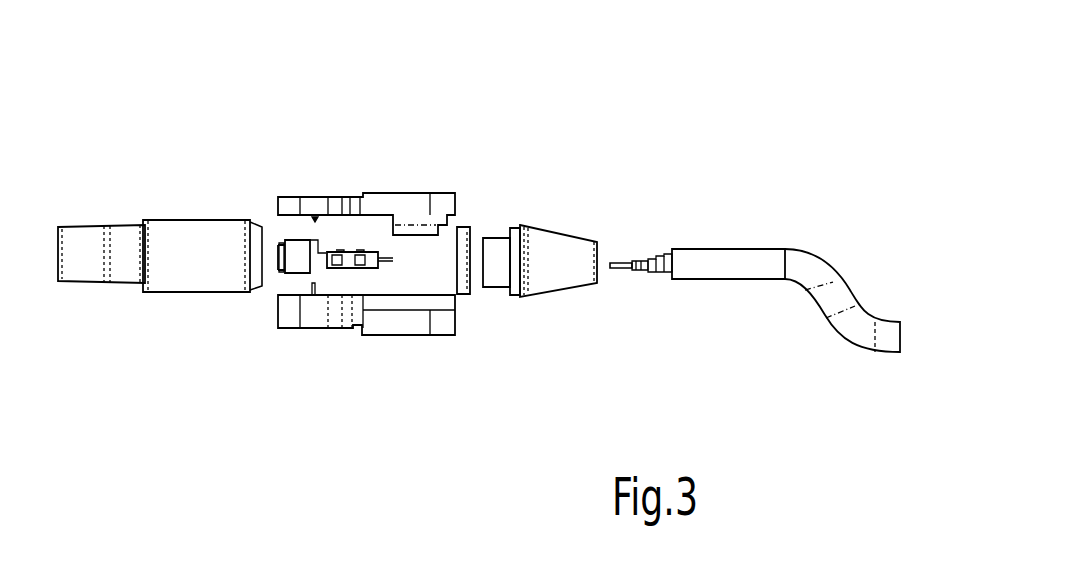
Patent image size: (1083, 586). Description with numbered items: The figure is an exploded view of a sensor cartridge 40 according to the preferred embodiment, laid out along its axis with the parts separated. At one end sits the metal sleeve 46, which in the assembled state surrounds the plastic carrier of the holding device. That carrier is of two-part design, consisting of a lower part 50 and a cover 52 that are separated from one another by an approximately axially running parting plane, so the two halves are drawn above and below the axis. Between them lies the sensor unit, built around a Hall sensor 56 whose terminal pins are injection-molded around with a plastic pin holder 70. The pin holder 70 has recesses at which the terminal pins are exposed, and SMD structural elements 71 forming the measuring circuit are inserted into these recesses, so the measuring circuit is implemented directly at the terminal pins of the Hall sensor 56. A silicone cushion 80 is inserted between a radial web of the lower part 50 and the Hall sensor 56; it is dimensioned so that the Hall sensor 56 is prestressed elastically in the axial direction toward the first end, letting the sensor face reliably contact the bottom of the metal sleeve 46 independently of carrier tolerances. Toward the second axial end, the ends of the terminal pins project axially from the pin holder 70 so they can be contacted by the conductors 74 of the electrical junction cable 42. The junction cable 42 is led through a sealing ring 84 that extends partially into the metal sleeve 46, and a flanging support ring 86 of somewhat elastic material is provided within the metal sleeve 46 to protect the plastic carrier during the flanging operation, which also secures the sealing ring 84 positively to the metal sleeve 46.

The sensor cartridge 40 is at (767, 64).
The electrical junction cable 42 is at (707, 267).
The metal sleeve 46 is at (180, 267).
The lower part 50 is at (285, 328).
The cover 52 is at (318, 205).
The Hall sensor 56 is at (300, 262).
The pin holder 70 is at (373, 252).
The SMD structural elements 71 is at (342, 252).
The conductors 74 is at (627, 261).
The silicone cushion 80 is at (277, 238).
The sealing ring 84 is at (552, 268).
The flanging support ring 86 is at (463, 294).